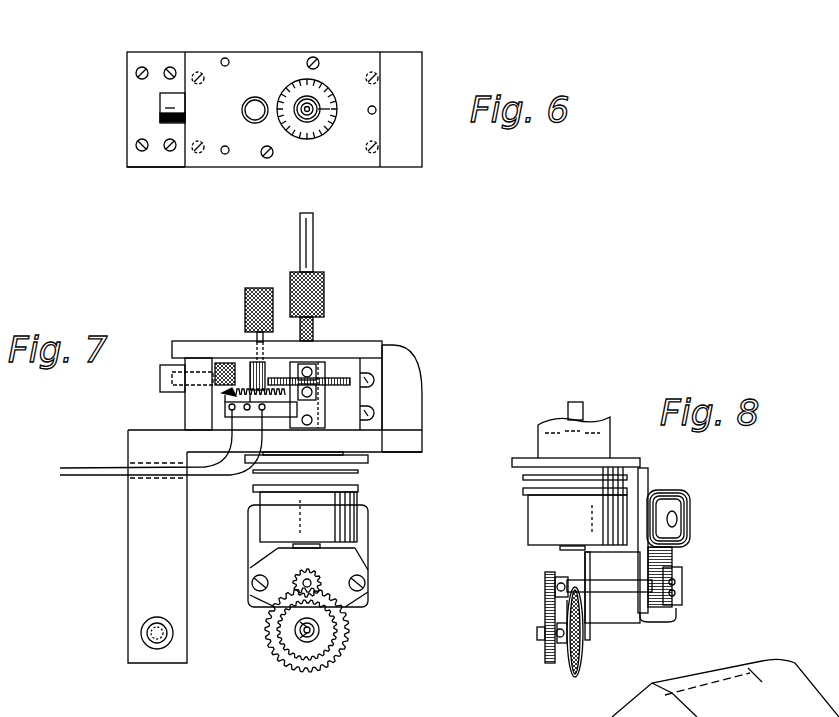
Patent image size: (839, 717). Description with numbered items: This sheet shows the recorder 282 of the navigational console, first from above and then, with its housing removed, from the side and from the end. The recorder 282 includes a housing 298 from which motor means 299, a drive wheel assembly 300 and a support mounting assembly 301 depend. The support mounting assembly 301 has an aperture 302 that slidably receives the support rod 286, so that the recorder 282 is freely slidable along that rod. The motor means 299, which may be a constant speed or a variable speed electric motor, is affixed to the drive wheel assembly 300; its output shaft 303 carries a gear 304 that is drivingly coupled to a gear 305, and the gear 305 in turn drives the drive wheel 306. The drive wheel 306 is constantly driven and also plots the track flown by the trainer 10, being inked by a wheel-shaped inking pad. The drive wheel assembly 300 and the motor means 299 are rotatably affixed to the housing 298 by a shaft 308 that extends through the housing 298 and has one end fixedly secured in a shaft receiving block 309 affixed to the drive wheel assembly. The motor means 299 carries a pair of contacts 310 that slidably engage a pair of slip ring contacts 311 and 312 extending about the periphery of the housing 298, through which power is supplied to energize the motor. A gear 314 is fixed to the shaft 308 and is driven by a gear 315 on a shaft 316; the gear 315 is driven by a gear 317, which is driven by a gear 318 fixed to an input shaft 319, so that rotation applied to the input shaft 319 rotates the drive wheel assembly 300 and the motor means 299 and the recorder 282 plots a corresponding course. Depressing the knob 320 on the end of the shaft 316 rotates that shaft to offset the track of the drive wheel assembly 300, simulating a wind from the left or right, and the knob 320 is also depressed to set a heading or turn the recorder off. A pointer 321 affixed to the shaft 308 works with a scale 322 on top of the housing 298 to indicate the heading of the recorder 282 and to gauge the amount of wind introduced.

In FIG. 8, the trainer 10 is at (762, 680).
In FIG. 6, the recorder 282 is at (118, 113).
In FIG. 7, the recorder 282 is at (397, 320).
In FIG. 8, the recorder 282 is at (531, 571).
In FIG. 7, the support rod 286 is at (145, 642).
In FIG. 7, the housing 298 is at (382, 347).
In FIG. 8, the motor means 299 is at (690, 492).
In FIG. 7, the drive wheel assembly 300 is at (318, 636).
In FIG. 8, the drive wheel assembly 300 is at (540, 611).
In FIG. 6, the support mounting assembly 301 is at (163, 169).
In FIG. 7, the support mounting assembly 301 is at (145, 522).
In FIG. 7, the aperture 302 is at (150, 620).
In FIG. 7, the output shaft 303 is at (312, 583).
In FIG. 7, the gear 304 is at (318, 579).
In FIG. 8, the gear 304 is at (546, 588).
In FIG. 7, the gear 305 is at (340, 628).
In FIG. 8, the gear 305 is at (545, 656).
In FIG. 7, the drive wheel 306 is at (297, 673).
In FIG. 8, the drive wheel 306 is at (580, 666).
In FIG. 8, the shaft 308 is at (583, 412).
In FIG. 7, the shaft receiving block 309 is at (306, 529).
In FIG. 8, the shaft receiving block 309 is at (583, 552).
In FIG. 8, the contacts 310 is at (598, 470).
In FIG. 8, the slip ring contact 311 is at (523, 478).
In FIG. 8, the slip ring contact 312 is at (523, 491).
In FIG. 7, the gear 314 is at (360, 398).
In FIG. 7, the gear 315 is at (252, 372).
In FIG. 7, the shaft 316 is at (247, 362).
In FIG. 7, the gear 317 is at (230, 391).
In FIG. 7, the gear 318 is at (232, 368).
In FIG. 7, the input shaft 319 is at (163, 373).
In FIG. 6, the knob 320 is at (257, 96).
In FIG. 7, the knob 320 is at (256, 290).
In FIG. 6, the pointer 321 is at (320, 130).
In FIG. 7, the pointer 321 is at (323, 339).
In FIG. 6, the scale 322 is at (325, 84).